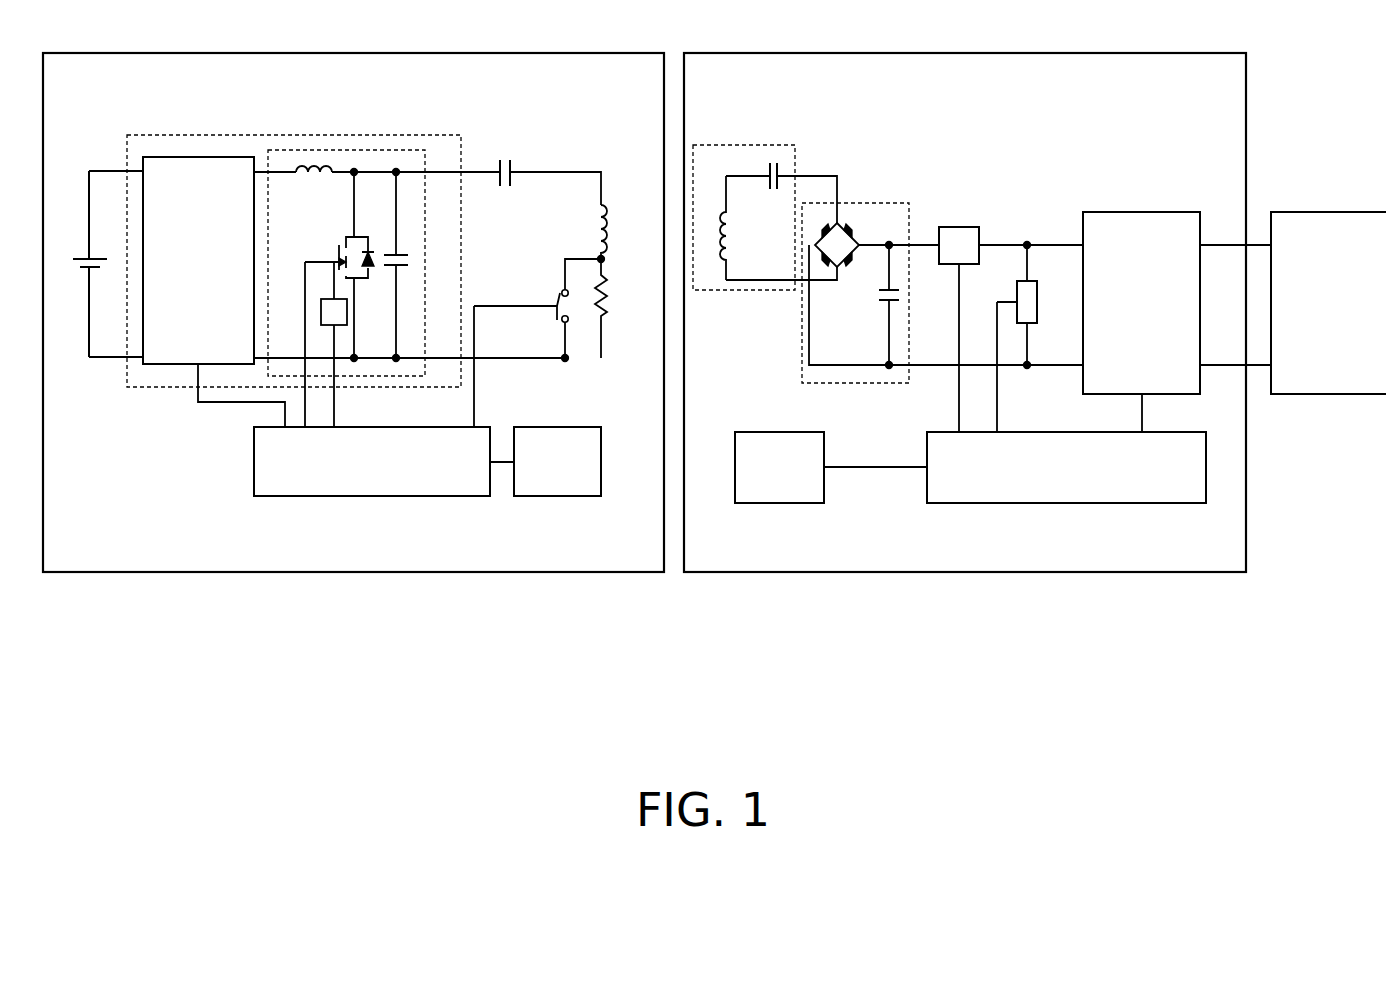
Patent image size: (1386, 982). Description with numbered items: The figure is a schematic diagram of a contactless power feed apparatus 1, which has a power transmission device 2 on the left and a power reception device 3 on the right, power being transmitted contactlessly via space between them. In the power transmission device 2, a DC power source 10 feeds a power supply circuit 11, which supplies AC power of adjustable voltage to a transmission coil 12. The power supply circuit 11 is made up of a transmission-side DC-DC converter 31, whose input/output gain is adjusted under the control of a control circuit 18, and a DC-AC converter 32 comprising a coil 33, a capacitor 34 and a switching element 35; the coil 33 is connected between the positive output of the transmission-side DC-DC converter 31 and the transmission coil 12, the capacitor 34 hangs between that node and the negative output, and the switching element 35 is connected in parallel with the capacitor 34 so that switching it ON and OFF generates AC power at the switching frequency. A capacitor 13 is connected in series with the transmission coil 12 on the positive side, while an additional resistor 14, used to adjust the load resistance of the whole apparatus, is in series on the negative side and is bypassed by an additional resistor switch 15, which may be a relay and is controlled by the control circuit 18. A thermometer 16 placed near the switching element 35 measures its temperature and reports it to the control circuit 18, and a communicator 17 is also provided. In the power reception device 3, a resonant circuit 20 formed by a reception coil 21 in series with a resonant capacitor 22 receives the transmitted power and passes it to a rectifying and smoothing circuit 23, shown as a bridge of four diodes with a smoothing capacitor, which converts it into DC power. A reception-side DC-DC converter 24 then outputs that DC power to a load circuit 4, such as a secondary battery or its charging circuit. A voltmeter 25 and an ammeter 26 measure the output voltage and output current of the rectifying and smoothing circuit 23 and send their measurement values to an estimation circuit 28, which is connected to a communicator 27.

The contactless power feed apparatus 1 is at (1193, 655).
The power transmission device 2 is at (600, 573).
The power reception device 3 is at (1042, 573).
The load circuit 4 is at (1330, 395).
The DC power source 10 is at (78, 255).
The power supply circuit 11 is at (153, 388).
The transmission coil 12 is at (608, 210).
The capacitor 13 is at (507, 160).
The additional resistor 14 is at (603, 315).
The additional resistor switch 15 is at (558, 294).
The thermometer 16 is at (322, 300).
The communicator 17 is at (555, 497).
The control circuit 18 is at (386, 497).
The resonant circuit 20 is at (717, 291).
The reception coil 21 is at (722, 212).
The resonant capacitor 22 is at (781, 172).
The rectifying and smoothing circuit 23 is at (875, 203).
The reception-side DC-DC converter 24 is at (1146, 212).
The voltmeter 25 is at (1037, 315).
The ammeter 26 is at (960, 227).
The communicator 27 is at (780, 504).
The estimation circuit 28 is at (1160, 504).
The transmission-side DC-DC converter 31 is at (228, 157).
The DC-AC converter 32 is at (385, 150).
The coil 33 is at (326, 170).
The capacitor 34 is at (400, 254).
The switching element 35 is at (345, 240).